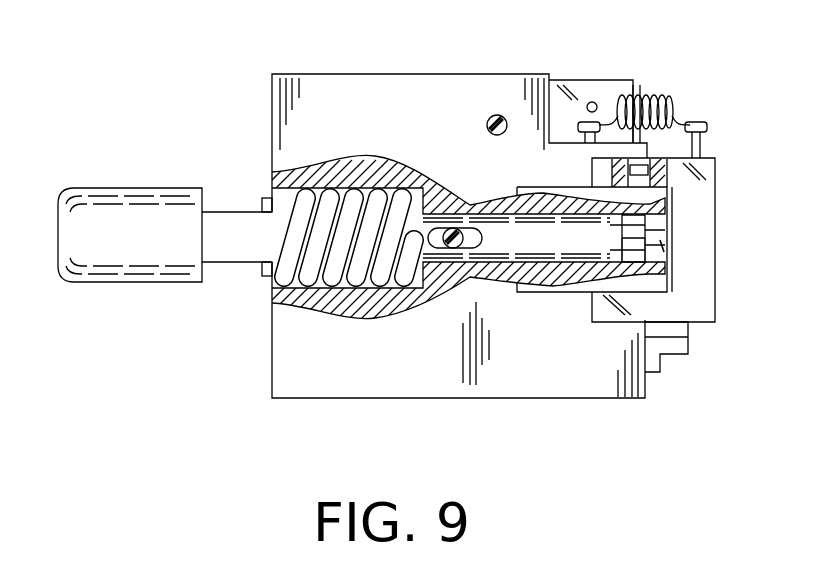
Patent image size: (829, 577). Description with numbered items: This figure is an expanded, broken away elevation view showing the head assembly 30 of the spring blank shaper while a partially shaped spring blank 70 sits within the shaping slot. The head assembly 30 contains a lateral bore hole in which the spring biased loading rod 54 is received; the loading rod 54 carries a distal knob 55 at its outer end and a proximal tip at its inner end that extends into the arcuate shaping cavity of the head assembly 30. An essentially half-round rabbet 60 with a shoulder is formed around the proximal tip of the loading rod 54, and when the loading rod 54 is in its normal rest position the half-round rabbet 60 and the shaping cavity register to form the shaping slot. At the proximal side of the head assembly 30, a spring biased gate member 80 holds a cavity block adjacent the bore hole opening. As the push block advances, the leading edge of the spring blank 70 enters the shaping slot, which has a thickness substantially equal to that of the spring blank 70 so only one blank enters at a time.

The head assembly 30 is at (387, 105).
The loading rod 54 is at (240, 217).
The distal knob 55 is at (117, 207).
The half-round rabbet 60 is at (640, 233).
The spring blank 70 is at (640, 248).
The gate member 80 is at (697, 303).